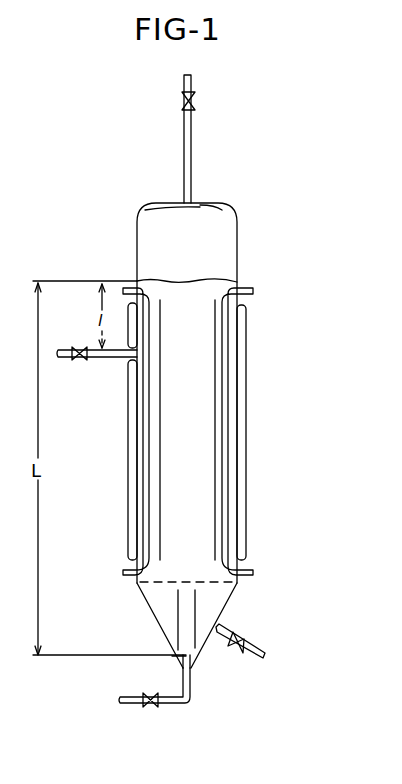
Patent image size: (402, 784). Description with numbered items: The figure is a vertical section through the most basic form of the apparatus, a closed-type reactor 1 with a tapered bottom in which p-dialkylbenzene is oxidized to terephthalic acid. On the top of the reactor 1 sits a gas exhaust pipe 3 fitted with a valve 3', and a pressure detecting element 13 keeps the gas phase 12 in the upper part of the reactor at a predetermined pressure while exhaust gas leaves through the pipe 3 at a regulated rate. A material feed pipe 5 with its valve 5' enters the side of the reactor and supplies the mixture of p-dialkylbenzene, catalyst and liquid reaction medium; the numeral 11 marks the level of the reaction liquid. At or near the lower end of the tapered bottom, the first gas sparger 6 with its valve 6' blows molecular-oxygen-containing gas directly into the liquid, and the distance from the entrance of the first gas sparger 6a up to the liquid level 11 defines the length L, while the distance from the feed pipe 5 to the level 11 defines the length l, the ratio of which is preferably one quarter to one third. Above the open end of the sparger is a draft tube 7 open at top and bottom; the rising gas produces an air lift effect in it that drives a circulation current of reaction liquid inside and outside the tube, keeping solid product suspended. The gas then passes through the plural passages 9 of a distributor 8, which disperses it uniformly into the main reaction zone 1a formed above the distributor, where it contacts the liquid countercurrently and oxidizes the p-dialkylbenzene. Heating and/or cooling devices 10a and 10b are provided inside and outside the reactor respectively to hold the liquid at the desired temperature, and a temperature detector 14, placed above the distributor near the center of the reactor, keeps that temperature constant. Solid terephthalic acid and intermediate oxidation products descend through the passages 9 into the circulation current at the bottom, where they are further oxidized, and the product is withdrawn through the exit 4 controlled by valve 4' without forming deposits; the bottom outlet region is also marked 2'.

The closed-type reactor 1 is at (238, 241).
The main reaction zone 1a is at (213, 398).
The bottom outlet 2' is at (209, 670).
The gas exhaust pipe 3 is at (200, 139).
The valve 3' is at (198, 103).
The exit 4 is at (245, 647).
The valve 4' is at (240, 637).
The material feed pipe 5 is at (97, 344).
The valve 5' is at (80, 345).
The first gas sparger 6 is at (162, 689).
The valve 6' is at (152, 709).
The entrance of the first gas sparger 6a is at (172, 658).
The draft tube 7 is at (197, 614).
The distributor 8 is at (203, 582).
The passages 9 is at (214, 592).
The heating and/or cooling device 10a is at (148, 375).
The heating and/or cooling device 10b is at (128, 463).
The reaction liquid level 11 is at (207, 279).
The gas phase 12 is at (148, 228).
The pressure detecting element 13 is at (219, 212).
The temperature detector 14 is at (200, 463).